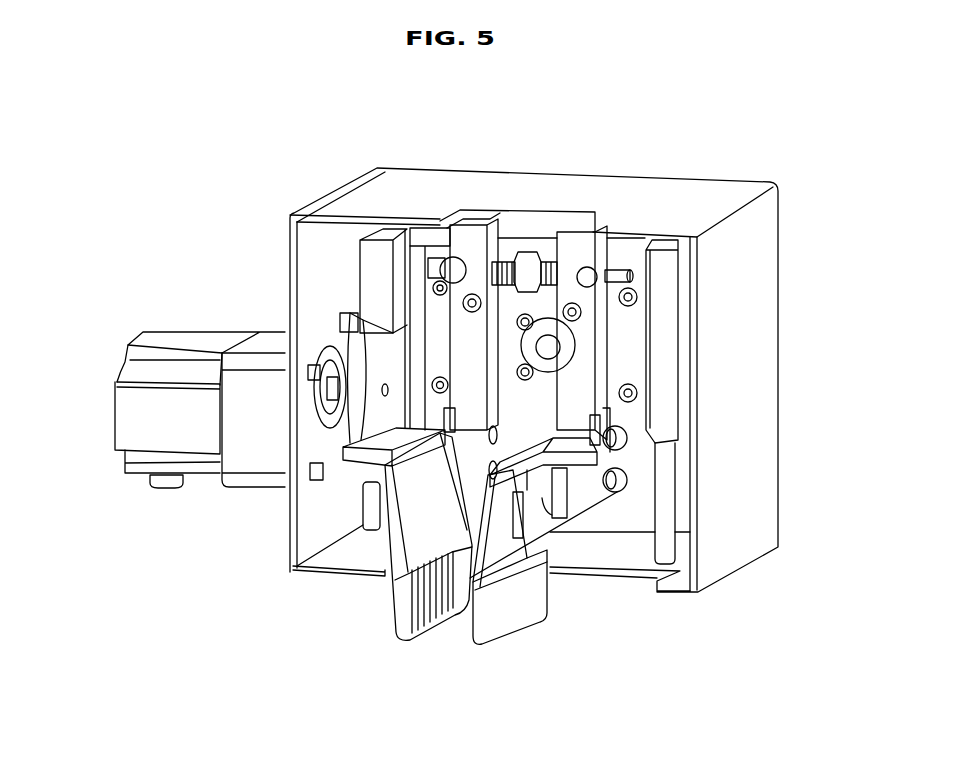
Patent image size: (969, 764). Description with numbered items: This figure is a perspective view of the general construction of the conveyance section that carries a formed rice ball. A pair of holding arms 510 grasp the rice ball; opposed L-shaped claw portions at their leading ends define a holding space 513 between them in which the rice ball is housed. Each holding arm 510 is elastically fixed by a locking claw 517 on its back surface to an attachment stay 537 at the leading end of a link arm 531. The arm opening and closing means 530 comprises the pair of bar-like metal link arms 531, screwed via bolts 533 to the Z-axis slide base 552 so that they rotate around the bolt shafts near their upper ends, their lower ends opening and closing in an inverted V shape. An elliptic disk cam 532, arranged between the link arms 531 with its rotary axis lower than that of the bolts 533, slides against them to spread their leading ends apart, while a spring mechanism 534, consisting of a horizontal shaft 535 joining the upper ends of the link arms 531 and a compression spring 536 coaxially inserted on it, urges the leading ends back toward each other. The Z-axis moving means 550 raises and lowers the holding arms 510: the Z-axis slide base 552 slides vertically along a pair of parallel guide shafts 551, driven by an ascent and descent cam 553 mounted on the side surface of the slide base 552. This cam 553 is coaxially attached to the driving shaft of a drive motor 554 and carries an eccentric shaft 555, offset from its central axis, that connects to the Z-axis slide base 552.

The holding arm 510 is at (384, 605).
The holding space 513 is at (451, 632).
The locking claw 517 is at (548, 502).
The arm opening and closing means 530 is at (484, 206).
The link arm 531 is at (465, 332).
The disk cam 532 is at (550, 344).
The bolt 533 is at (470, 305).
The spring mechanism 534 is at (562, 186).
The pin 535 is at (622, 268).
The compression spring 536 is at (546, 250).
The attachment stay 537 is at (360, 527).
The Z-axis moving means 550 is at (666, 275).
The guide shaft 551 is at (667, 482).
The Z-axis slide base 552 is at (650, 412).
The ascent and descent cam 553 is at (358, 428).
The drive motor 554 is at (127, 423).
The eccentric shaft 555 is at (390, 337).